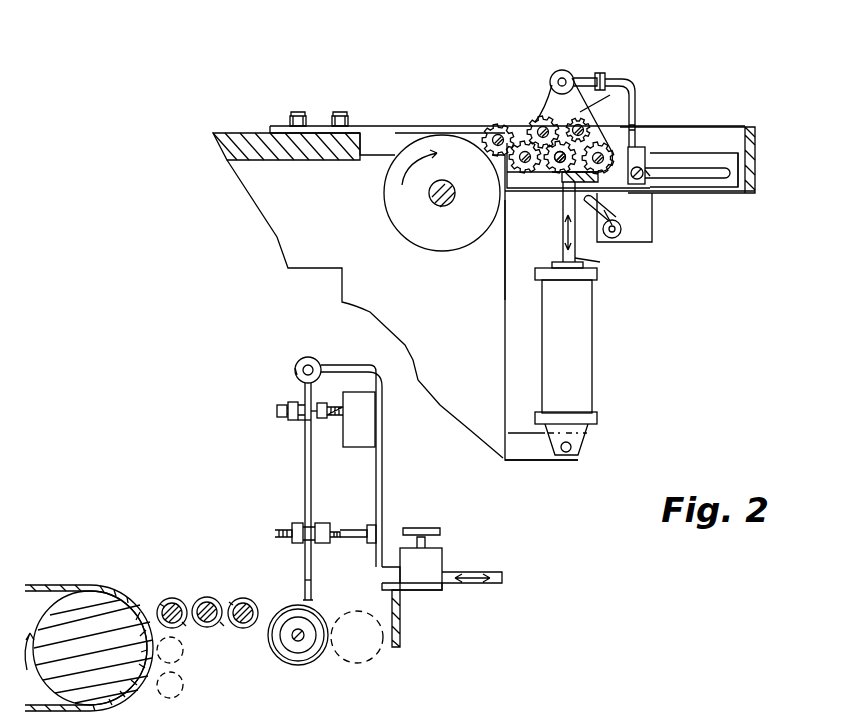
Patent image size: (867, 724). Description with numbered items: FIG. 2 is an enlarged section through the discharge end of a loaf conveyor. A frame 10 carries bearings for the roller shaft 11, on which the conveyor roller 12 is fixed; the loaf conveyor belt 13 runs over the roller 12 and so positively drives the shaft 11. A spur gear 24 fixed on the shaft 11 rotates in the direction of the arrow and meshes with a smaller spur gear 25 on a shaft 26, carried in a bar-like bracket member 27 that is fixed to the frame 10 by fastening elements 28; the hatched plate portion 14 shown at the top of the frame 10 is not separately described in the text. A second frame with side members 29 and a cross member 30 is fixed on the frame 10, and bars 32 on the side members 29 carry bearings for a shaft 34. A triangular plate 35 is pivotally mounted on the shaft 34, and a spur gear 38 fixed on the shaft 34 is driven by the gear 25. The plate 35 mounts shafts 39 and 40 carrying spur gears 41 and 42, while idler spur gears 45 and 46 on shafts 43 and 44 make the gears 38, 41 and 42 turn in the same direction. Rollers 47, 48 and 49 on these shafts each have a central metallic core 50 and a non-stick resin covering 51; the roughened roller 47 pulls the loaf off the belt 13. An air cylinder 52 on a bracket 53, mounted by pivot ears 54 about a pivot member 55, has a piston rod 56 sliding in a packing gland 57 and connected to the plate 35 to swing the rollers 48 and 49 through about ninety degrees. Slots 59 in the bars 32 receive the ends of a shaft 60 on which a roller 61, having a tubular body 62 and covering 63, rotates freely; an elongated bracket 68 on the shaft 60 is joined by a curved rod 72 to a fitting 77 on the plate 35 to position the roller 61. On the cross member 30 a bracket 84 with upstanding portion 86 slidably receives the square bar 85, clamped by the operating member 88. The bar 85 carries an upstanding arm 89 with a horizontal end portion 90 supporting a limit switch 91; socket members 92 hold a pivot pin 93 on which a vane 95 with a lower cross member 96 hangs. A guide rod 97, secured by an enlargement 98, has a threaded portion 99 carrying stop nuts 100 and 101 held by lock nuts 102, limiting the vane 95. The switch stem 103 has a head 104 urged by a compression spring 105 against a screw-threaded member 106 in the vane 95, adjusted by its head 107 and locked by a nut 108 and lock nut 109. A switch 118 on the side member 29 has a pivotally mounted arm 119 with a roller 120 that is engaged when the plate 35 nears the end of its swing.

The frame 10 is at (255, 192).
The roller shaft 11 is at (432, 205).
The conveyor roller 12 is at (77, 613).
The loaf conveyor belt 13 is at (90, 597).
The mounting plate 14 is at (228, 135).
The spur gear 24 is at (440, 135).
The smaller spur gear 25 is at (492, 128).
The shaft 26 is at (517, 143).
The bar-like bracket member 27 is at (377, 126).
The fastening elements 28 is at (298, 112).
The side members 29 is at (720, 127).
The cross member 30 is at (755, 140).
The bars 32 is at (728, 187).
The shaft 34 is at (500, 247).
The triangular plate 35 is at (578, 120).
The spur gear 38 is at (535, 118).
The shaft 39 is at (563, 222).
The shaft 40 is at (620, 185).
The spur gear 41 is at (540, 200).
The spur gear 42 is at (605, 150).
The shaft 43 is at (552, 145).
The shaft 44 is at (600, 140).
The spur gear 45 is at (558, 152).
The spur gear 46 is at (585, 112).
The roller 47 is at (167, 600).
The roller 48 is at (208, 598).
The roller 49 is at (247, 600).
The central metallic core 50 is at (163, 605).
The outer cylindrical covering 51 is at (227, 623).
The air cylinder 52 is at (583, 378).
The bracket 53 is at (548, 463).
The pivot ears 54 is at (580, 437).
The pivot member 55 is at (577, 448).
The piston rod 56 is at (590, 262).
The packing gland 57 is at (583, 268).
The slots 59 is at (710, 180).
The shaft 60 is at (647, 173).
The roller 61 is at (320, 653).
The hollow tubular metallic body portion 62 is at (297, 663).
The surface covering 63 is at (273, 657).
The bracket 68 is at (641, 160).
The curved rod 72 is at (622, 79).
The fitting 77 is at (601, 72).
The bracket 84 is at (430, 590).
The bar 85 is at (503, 580).
The upstanding portion 86 is at (437, 558).
The operating member 88 is at (430, 523).
The upstanding arm 89 is at (383, 467).
The horizontally extending upper end portion 90 is at (352, 365).
The limit switch 91 is at (368, 425).
The socket members 92 is at (303, 358).
The pivot pin 93 is at (295, 368).
The vane 95 is at (303, 477).
The cross member 96 is at (308, 592).
The guide rod 97 is at (358, 527).
The enlargement 98 is at (370, 532).
The screw-threaded portion 99 is at (310, 548).
The stop nut 100 is at (318, 523).
The stop nut 101 is at (298, 522).
The lock nuts 102 is at (325, 530).
The operating stem 103 is at (332, 393).
The head 104 is at (302, 397).
The compression spring 105 is at (332, 417).
The screw-threaded member 106 is at (287, 420).
The head 107 is at (275, 413).
The nut 108 is at (302, 425).
The lock nut 109 is at (290, 402).
The switch 118 is at (577, 258).
The pivotally mounted arm 119 is at (632, 215).
The roller 120 is at (580, 243).